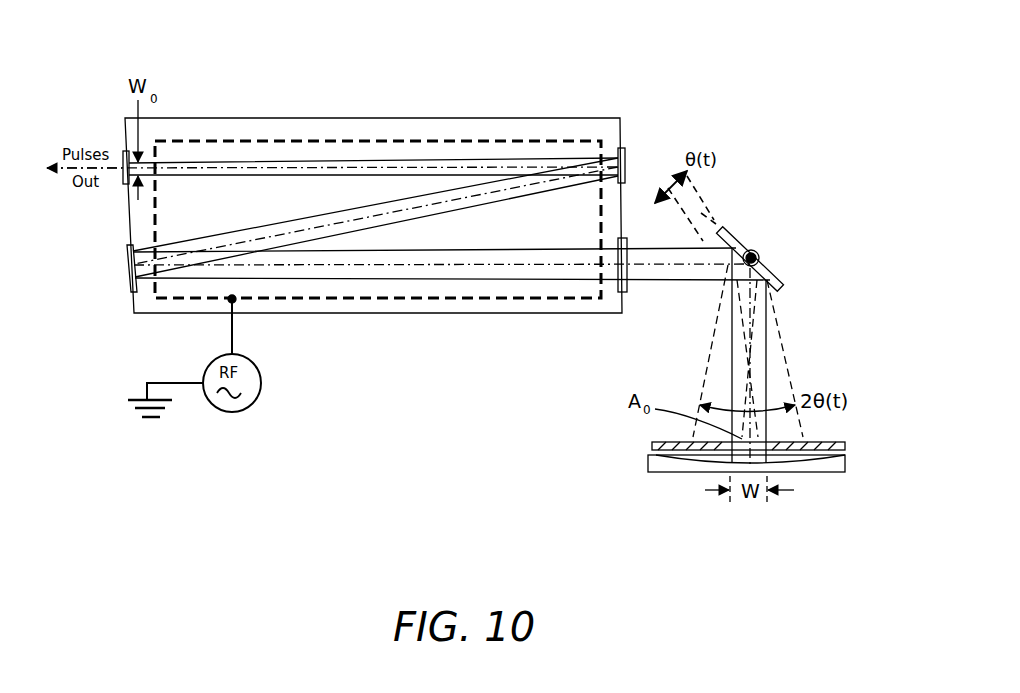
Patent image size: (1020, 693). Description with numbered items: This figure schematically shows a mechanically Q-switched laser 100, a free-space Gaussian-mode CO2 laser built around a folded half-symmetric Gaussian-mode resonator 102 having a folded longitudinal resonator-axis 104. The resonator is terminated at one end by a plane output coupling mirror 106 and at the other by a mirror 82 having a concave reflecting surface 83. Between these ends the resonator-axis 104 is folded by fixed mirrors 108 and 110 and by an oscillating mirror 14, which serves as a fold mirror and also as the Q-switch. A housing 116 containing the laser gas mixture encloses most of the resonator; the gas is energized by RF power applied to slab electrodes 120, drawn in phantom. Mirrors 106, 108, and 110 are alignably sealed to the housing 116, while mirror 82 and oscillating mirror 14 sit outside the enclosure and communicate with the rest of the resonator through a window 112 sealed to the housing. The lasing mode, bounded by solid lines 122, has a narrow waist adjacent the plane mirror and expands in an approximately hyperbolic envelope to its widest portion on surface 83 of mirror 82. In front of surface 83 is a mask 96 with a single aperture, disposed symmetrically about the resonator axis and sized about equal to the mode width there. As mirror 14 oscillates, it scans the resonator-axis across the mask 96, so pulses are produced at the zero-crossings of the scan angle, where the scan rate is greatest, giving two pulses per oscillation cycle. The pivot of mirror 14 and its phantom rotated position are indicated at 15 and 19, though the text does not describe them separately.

The mechanically Q-switched laser 100 is at (304, 507).
The folded half-symmetric Gaussian-mode resonator 102 is at (199, 197).
The longitudinal resonator-axis 104 is at (187, 168).
The plane output coupling mirror 106 is at (123, 152).
The fixed mirror 108 is at (612, 149).
The fixed mirror 110 is at (127, 254).
The window 112 is at (625, 289).
The housing 116 is at (400, 316).
The slab electrodes 120 is at (490, 300).
The solid lines bounding the lasing mode 122 is at (350, 174).
The oscillating mirror 14 is at (770, 269).
The pivot axis 15 is at (759, 251).
The mirror actuator 19 is at (709, 215).
The mask 96 is at (648, 444).
The mirror 82 is at (836, 476).
The concave reflecting surface 83 is at (664, 458).